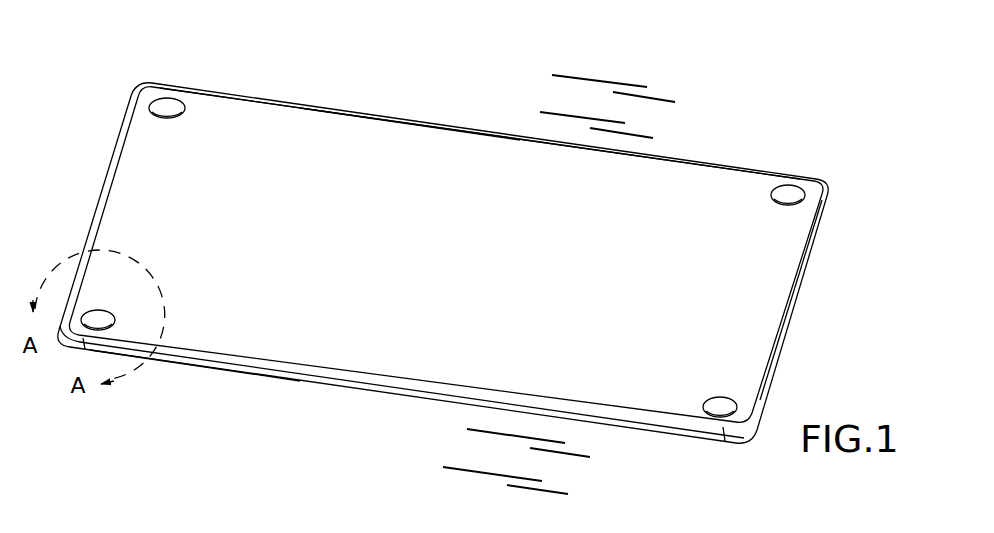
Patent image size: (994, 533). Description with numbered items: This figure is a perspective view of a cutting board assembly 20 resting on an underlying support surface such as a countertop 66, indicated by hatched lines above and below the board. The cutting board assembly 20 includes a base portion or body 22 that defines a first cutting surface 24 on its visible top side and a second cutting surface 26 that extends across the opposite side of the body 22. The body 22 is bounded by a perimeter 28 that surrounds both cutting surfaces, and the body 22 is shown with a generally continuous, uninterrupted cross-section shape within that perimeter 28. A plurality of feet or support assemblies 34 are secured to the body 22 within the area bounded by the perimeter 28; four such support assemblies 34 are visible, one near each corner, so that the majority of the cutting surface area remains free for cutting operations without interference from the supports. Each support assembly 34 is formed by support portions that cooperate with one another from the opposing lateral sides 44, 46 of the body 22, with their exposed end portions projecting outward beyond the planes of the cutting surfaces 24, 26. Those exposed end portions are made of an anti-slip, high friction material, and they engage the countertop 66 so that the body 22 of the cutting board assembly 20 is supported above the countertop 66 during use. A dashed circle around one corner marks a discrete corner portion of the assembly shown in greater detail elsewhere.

The cutting board assembly 20 is at (766, 94).
The body 22 is at (428, 152).
The first cutting surface 24 is at (416, 252).
The second cutting surface 26 is at (339, 411).
The perimeter 28 is at (797, 316).
The support assembly 34 is at (170, 131).
The lateral side 44 is at (311, 98).
The lateral side 46 is at (199, 403).
The countertop 66 is at (572, 112).